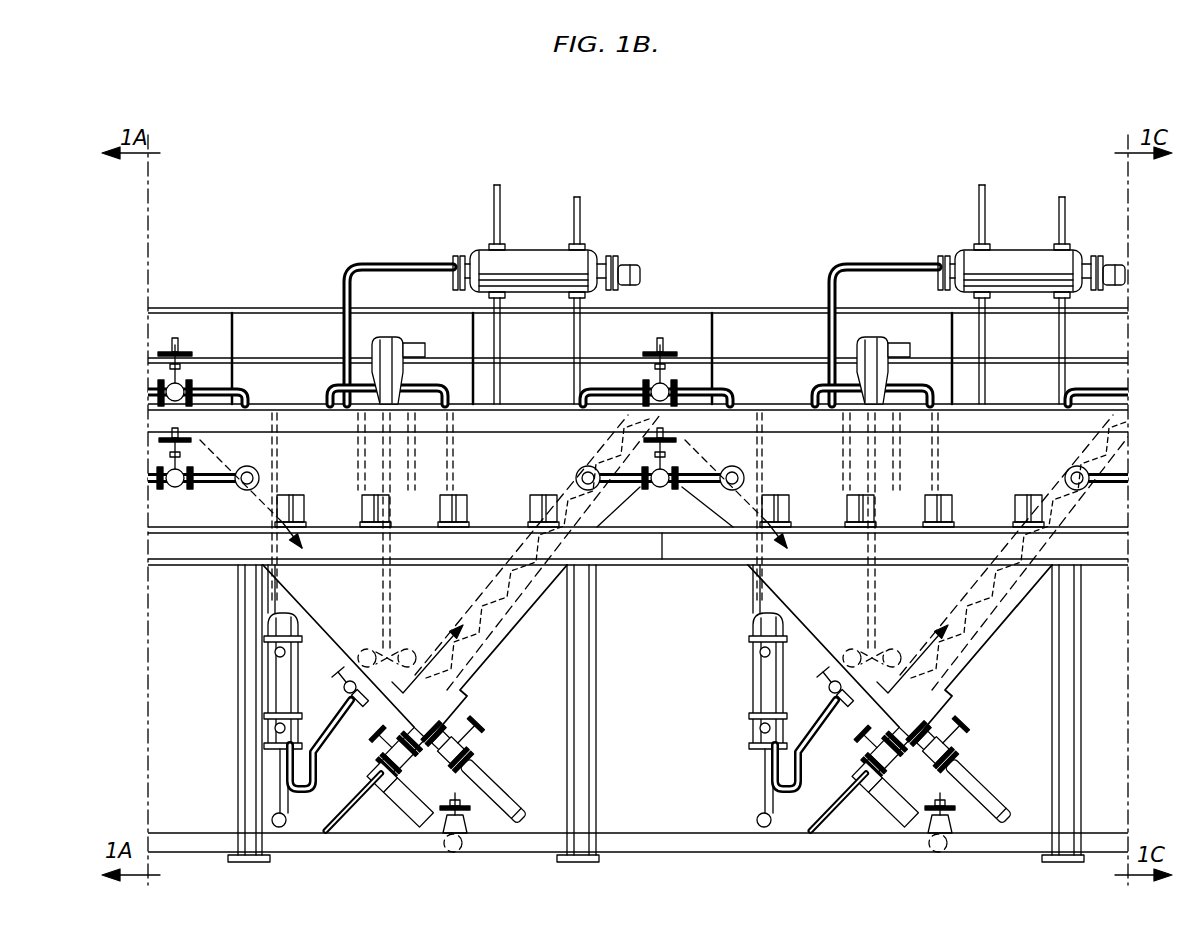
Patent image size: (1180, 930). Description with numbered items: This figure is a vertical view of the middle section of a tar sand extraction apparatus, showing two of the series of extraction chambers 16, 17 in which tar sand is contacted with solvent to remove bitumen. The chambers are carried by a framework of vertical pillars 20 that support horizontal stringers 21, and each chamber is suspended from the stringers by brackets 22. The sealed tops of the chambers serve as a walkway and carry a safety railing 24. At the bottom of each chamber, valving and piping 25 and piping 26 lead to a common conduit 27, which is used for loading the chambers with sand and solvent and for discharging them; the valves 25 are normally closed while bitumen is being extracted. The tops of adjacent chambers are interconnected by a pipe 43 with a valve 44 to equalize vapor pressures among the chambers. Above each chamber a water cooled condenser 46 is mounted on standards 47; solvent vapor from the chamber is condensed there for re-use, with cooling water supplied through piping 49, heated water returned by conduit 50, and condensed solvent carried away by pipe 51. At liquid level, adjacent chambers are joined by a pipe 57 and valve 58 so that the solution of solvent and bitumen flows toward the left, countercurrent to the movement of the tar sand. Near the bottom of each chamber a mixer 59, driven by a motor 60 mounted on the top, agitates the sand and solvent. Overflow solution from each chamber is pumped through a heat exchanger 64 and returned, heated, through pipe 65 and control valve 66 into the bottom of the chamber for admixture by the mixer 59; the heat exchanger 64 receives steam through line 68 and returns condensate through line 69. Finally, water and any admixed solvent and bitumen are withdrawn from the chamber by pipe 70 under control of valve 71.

The extraction chamber 16 is at (304, 609).
The extraction chamber 17 is at (900, 653).
The vertical pillar 20 is at (589, 716).
The horizontal stringer 21 is at (687, 559).
The bracket 22 is at (902, 508).
The railing 24 is at (205, 308).
The valving and piping 25 is at (426, 789).
The piping 26 is at (377, 819).
The conduit 27 is at (1028, 833).
The pipe 43 is at (670, 369).
The valve 44 is at (668, 381).
The water cooled condenser 46 is at (532, 250).
The standard 47 is at (578, 350).
The piping 49 is at (494, 207).
The conduit 50 is at (582, 210).
The pipe 51 is at (628, 263).
The pipe 57 is at (660, 478).
The valve 58 is at (657, 490).
The mixer 59 is at (394, 648).
The motor 60 is at (385, 345).
The heat exchanger 64 is at (296, 673).
The pipe 65 is at (327, 740).
The control valve 66 is at (352, 699).
The steam line 68 is at (274, 652).
The condensate line 69 is at (274, 728).
The pipe 70 is at (493, 791).
The valve 71 is at (461, 740).